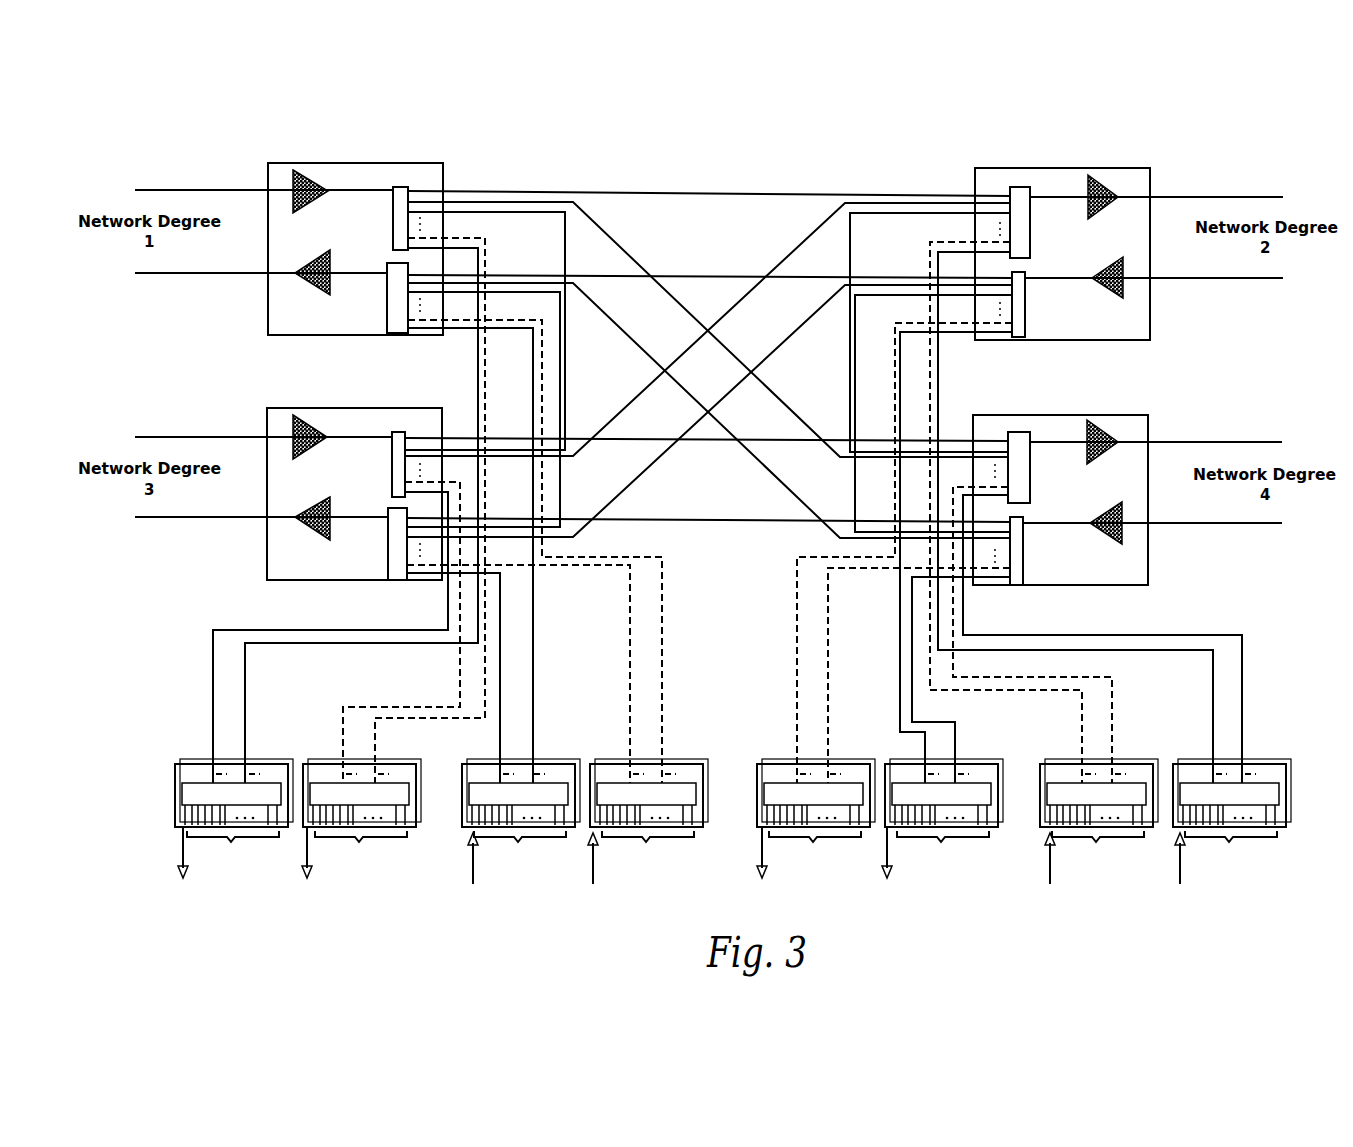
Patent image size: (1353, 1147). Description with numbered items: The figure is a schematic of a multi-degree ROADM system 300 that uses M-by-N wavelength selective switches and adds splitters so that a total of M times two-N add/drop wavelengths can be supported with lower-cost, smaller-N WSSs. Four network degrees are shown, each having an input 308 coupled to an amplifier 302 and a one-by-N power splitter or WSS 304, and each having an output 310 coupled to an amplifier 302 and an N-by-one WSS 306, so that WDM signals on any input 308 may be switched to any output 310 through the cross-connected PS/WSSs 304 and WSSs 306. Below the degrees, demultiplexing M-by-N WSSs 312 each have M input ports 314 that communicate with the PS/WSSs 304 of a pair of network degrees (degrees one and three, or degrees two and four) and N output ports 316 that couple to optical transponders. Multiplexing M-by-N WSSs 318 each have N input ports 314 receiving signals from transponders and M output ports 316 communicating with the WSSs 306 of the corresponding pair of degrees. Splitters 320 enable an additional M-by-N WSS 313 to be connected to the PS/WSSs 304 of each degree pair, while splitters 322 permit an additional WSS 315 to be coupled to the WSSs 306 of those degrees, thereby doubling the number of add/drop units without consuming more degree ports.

The multi-degree ROADM system 300 is at (868, 158).
The amplifier 302 is at (300, 173).
The 1×N PS or WSS 304 is at (397, 192).
The N×1 WSS 306 is at (388, 323).
The input 308 is at (168, 190).
The output 310 is at (188, 273).
The M×N WSS (demux) 312 is at (998, 827).
The additional M×N WSS 313 is at (292, 763).
The input ports 314 is at (930, 722).
The additional WSS 315 is at (565, 767).
The output ports 316 is at (502, 703).
The M×N WSS (mux) 318 is at (1173, 830).
The splitters 320 is at (213, 765).
The splitters 322 is at (499, 766).